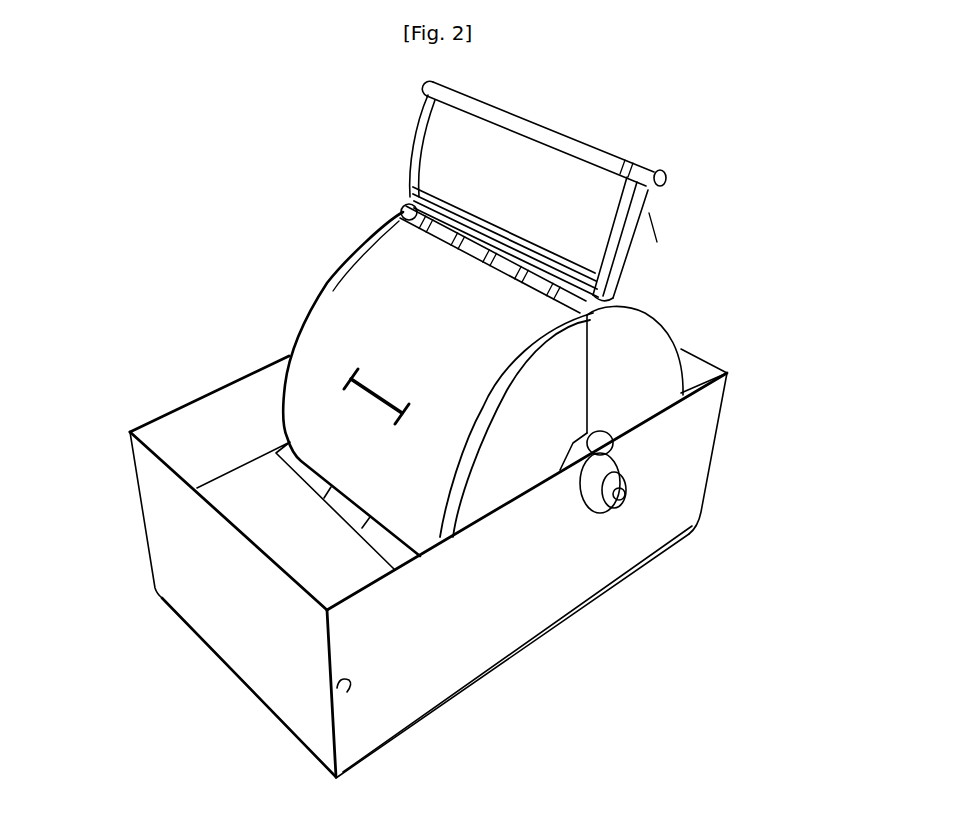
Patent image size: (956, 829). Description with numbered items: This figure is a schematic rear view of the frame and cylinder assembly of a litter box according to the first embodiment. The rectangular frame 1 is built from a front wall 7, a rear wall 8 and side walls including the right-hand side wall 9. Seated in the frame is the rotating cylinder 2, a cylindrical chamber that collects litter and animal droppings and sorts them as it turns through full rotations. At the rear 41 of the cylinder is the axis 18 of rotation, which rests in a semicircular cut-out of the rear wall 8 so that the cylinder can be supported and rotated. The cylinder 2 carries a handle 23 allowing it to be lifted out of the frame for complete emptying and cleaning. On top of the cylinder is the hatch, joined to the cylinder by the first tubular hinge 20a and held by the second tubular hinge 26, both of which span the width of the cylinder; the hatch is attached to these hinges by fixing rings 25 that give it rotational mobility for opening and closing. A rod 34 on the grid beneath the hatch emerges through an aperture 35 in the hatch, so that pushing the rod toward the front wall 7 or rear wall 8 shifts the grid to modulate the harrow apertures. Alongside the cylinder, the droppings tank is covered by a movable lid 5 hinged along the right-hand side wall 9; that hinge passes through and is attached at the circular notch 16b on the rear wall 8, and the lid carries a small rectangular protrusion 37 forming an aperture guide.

The frame 1 is at (719, 437).
The rotating cylinder 2 is at (357, 300).
The lid 5 is at (262, 513).
The front wall 7 is at (192, 405).
The rear wall 8 is at (522, 580).
The right-hand side wall 9 is at (238, 613).
The second circular notch 16b is at (356, 688).
The axis of rotation 18 is at (622, 492).
The first hinge 20a is at (601, 306).
The handle 23 is at (340, 372).
The fixing rings 25 is at (582, 142).
The second hinge 26 is at (663, 173).
The rod 34 is at (494, 169).
The aperture 35 is at (526, 179).
The small rectangular protrusion 37 is at (290, 442).
The rear of the cylinder 41 is at (722, 364).